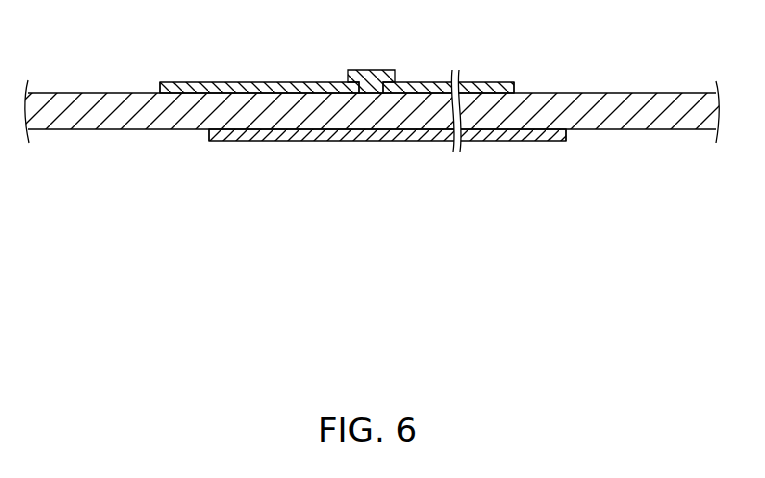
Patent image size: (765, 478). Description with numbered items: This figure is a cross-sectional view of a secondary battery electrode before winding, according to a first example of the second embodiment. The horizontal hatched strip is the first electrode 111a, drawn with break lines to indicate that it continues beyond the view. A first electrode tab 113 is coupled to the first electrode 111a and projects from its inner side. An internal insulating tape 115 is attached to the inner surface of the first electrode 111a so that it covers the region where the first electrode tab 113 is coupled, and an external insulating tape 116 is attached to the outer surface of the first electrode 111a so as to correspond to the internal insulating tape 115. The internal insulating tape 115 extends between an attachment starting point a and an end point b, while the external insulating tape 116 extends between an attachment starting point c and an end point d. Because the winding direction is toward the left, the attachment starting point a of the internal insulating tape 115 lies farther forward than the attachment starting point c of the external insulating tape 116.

The first electrode 111a is at (383, 117).
The first electrode tab 113 is at (368, 88).
The internal insulating tape 115 is at (262, 82).
The external insulating tape 116 is at (250, 142).
The attachment starting point of the internal insulating tape a is at (159, 72).
The point b is at (515, 73).
The attachment starting point of the external insulating tape c is at (211, 150).
The point d is at (569, 149).